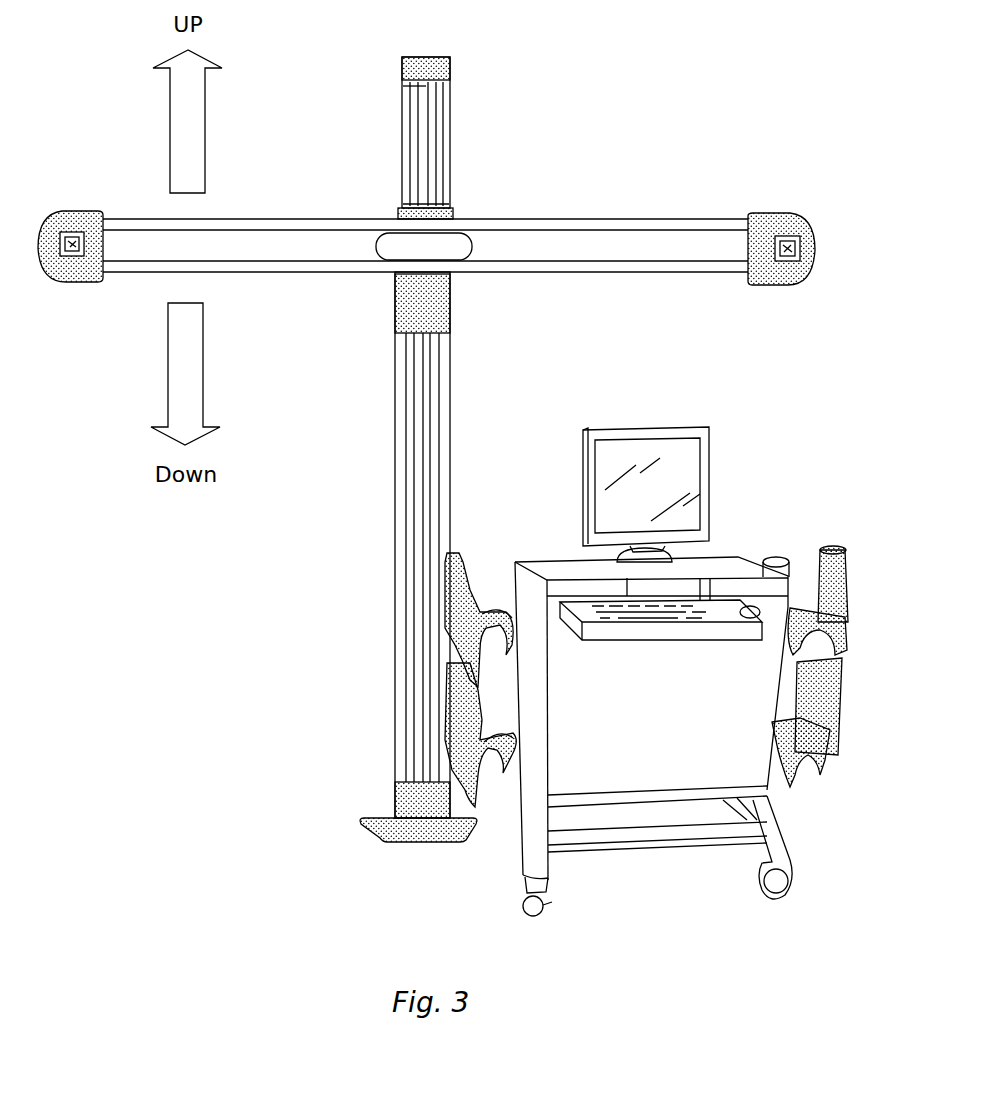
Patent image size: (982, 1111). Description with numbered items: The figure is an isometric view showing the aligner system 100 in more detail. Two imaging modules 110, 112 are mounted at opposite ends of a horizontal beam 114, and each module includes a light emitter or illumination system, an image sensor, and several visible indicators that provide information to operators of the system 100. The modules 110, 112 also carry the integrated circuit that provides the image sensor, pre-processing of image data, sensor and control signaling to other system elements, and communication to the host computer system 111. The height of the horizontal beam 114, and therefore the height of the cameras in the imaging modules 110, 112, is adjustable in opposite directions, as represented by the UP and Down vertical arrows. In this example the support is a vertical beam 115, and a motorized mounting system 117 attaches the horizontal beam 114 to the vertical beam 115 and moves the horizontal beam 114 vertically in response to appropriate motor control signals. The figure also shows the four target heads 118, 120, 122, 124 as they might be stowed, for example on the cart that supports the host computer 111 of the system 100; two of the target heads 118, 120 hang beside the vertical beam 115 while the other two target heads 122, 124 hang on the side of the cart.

The aligner system 100 is at (645, 121).
The imaging module 110 is at (66, 206).
The host computer system 111 is at (659, 425).
The imaging module 112 is at (781, 210).
The horizontal beam 114 is at (256, 216).
The vertical beam 115 is at (457, 112).
The motorized mounting system 117 is at (455, 206).
The target head 118 is at (443, 624).
The target head 120 is at (443, 714).
The target head 122 is at (856, 566).
The target head 124 is at (842, 738).